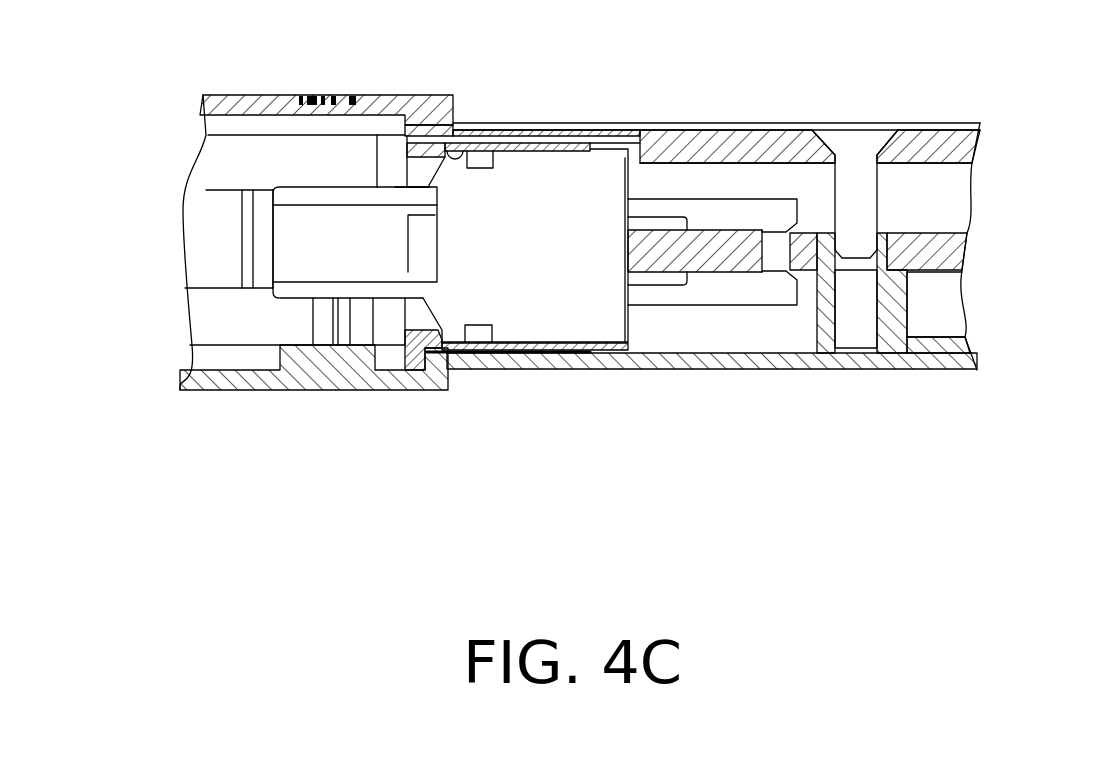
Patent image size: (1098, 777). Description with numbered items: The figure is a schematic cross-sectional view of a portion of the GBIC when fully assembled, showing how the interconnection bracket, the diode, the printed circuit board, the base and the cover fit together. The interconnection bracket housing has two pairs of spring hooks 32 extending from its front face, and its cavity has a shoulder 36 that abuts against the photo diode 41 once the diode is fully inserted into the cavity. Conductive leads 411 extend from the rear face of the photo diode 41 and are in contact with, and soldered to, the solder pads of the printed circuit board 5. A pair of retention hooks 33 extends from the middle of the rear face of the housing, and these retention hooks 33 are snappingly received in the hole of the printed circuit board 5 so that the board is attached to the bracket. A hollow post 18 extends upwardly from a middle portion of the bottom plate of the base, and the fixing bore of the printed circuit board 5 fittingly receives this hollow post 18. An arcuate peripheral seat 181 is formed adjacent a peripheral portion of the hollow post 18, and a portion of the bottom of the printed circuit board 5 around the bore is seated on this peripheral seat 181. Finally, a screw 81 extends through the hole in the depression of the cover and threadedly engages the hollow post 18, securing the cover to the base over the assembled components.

The spring hooks 32 is at (210, 248).
The shoulder 36 is at (470, 135).
The photo diode 41 is at (598, 185).
The conductive leads 411 is at (662, 226).
The retention hooks 33 is at (785, 212).
The screw 81 is at (877, 203).
The printed circuit board 5 is at (695, 258).
The hollow post 18 is at (820, 325).
The peripheral seat 181 is at (908, 293).